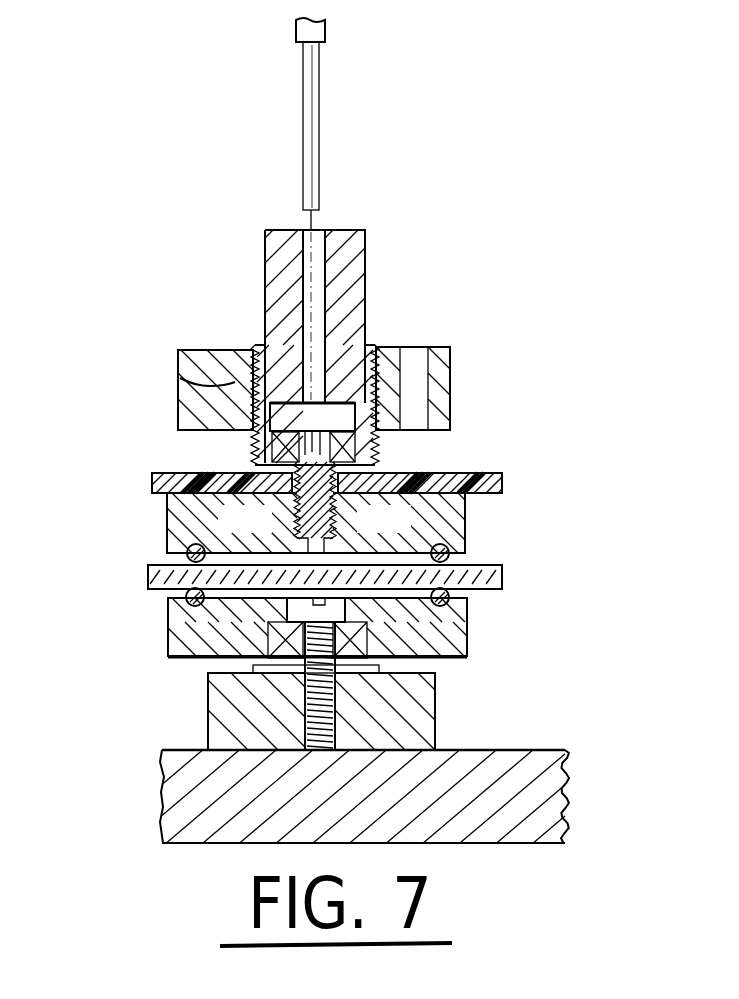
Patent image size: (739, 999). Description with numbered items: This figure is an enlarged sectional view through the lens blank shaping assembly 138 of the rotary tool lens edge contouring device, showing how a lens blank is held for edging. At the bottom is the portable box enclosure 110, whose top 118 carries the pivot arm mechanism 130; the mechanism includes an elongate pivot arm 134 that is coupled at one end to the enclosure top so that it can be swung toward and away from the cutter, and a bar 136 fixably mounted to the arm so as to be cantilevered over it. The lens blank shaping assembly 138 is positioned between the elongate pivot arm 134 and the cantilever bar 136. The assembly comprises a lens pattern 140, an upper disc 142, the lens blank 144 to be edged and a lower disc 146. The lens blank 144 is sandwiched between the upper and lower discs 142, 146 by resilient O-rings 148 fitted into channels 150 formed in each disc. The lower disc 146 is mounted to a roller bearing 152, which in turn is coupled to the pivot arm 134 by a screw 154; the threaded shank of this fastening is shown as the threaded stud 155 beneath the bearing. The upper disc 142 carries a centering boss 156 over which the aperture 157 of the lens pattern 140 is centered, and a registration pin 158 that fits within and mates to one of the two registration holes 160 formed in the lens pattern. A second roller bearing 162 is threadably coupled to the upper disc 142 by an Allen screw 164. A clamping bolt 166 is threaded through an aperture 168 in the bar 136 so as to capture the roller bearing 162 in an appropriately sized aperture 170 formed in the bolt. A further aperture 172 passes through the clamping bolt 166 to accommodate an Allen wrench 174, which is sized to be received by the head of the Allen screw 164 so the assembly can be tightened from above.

The portable box enclosure 110 is at (568, 773).
The top of portable box enclosure 118 is at (538, 748).
The pivot arm mechanism 130 is at (177, 722).
The elongate pivot arm 134 is at (440, 711).
The bar 136 is at (452, 380).
The lens blank shaping assembly 138 is at (131, 633).
The lens pattern 140 is at (505, 477).
The upper disc 142 is at (467, 530).
The lens blank 144 is at (505, 575).
The lower disc 146 is at (468, 640).
The resilient O-rings 148 is at (188, 604).
The channels 150 is at (470, 612).
The roller bearing 152 is at (196, 660).
The screw 154 is at (336, 692).
The threaded stud 155 is at (315, 507).
The centering boss 156 is at (245, 520).
The aperture of lens pattern 157 is at (368, 457).
The registration pin 158 is at (425, 472).
The registration holes 160 is at (228, 478).
The roller bearing 162 is at (256, 450).
The Allen screw 164 is at (384, 520).
The clamping bolt 166 is at (265, 252).
The aperture in bar 168 is at (374, 348).
The aperture in clamping bolt 170 is at (180, 378).
The further aperture 172 is at (366, 275).
The Allen wrench 174 is at (320, 152).